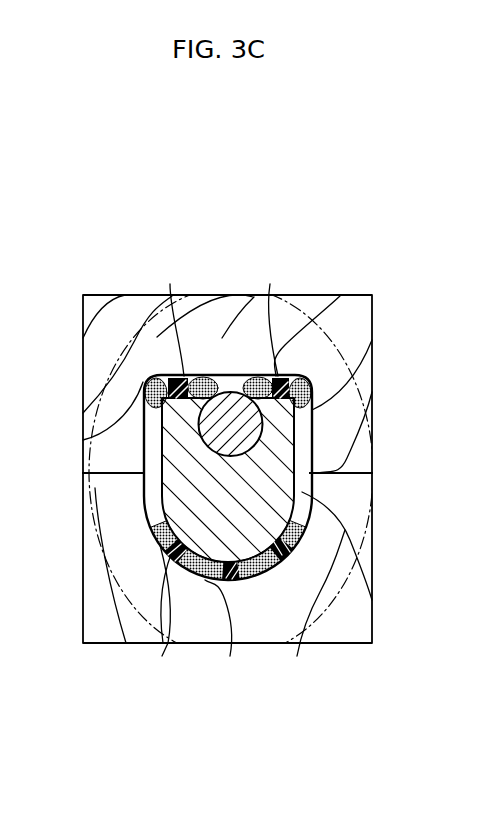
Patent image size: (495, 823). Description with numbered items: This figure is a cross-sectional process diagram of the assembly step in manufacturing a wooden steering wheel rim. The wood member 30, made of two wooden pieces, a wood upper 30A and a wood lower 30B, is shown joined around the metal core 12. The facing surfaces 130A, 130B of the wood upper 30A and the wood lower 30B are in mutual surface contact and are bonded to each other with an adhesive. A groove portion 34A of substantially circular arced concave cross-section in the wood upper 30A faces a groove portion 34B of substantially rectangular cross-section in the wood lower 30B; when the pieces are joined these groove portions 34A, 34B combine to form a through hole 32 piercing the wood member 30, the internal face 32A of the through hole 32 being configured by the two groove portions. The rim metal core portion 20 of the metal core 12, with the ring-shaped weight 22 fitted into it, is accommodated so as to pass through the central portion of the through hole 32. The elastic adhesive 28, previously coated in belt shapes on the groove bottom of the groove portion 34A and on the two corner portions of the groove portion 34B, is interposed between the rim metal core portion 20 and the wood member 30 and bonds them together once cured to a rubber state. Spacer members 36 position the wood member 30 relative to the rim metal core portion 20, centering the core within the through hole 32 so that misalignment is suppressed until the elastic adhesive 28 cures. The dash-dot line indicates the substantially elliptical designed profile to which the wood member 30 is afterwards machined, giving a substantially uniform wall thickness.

The wood member 30 is at (359, 266).
The wood upper 30A is at (333, 650).
The wood lower 30B is at (330, 290).
The spacer members 36 is at (245, 472).
The elastic adhesive 28 is at (252, 376).
The metal core 12 is at (148, 436).
The rim metal core portion 20 is at (180, 468).
The weight 22 is at (252, 453).
The facing surface 130A is at (90, 452).
The facing surface 130B is at (105, 476).
The internal face 32A is at (147, 488).
The through hole 32 is at (443, 428).
The groove portion 34A is at (300, 492).
The groove portion 34B is at (302, 437).